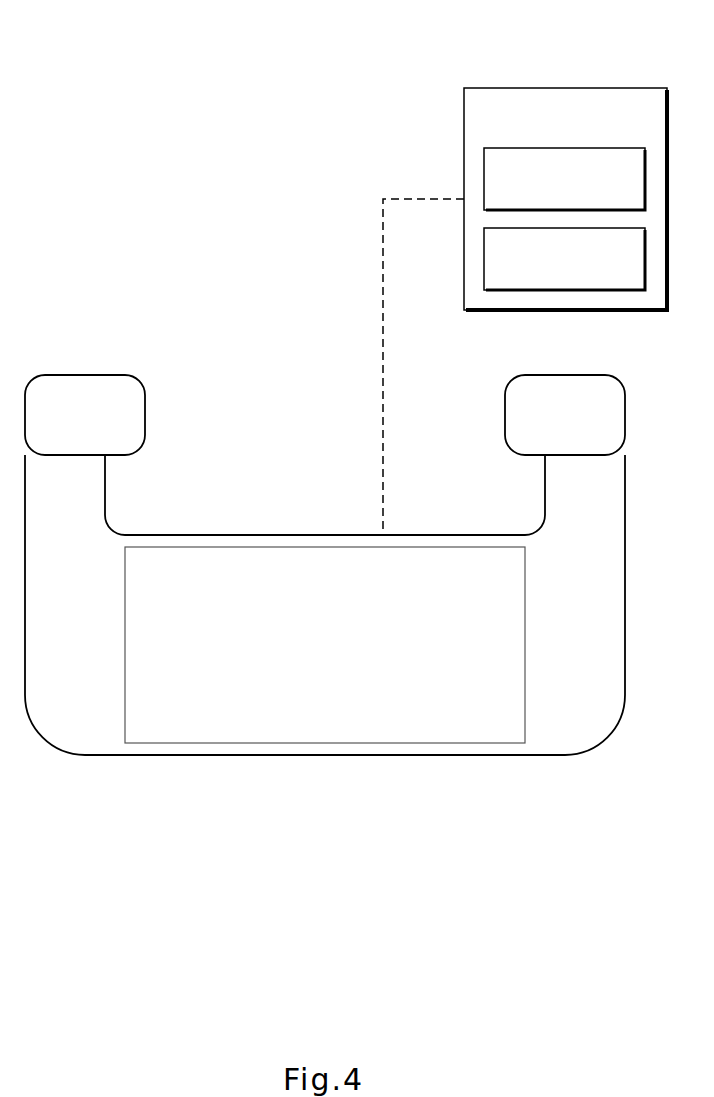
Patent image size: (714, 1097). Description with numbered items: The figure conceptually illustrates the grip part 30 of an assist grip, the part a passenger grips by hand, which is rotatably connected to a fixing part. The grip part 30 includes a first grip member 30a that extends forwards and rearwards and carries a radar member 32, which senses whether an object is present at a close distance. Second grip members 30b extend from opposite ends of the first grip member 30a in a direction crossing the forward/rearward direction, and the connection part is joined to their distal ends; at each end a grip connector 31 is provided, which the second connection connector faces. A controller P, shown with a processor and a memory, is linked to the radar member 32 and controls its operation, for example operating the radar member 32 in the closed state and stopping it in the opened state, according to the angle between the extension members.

The grip part 30 is at (279, 328).
The first grip member 30a is at (208, 543).
The second grip members 30b is at (558, 496).
The grip connector 31 is at (533, 415).
The radar member 32 is at (310, 575).
The controller P is at (566, 88).